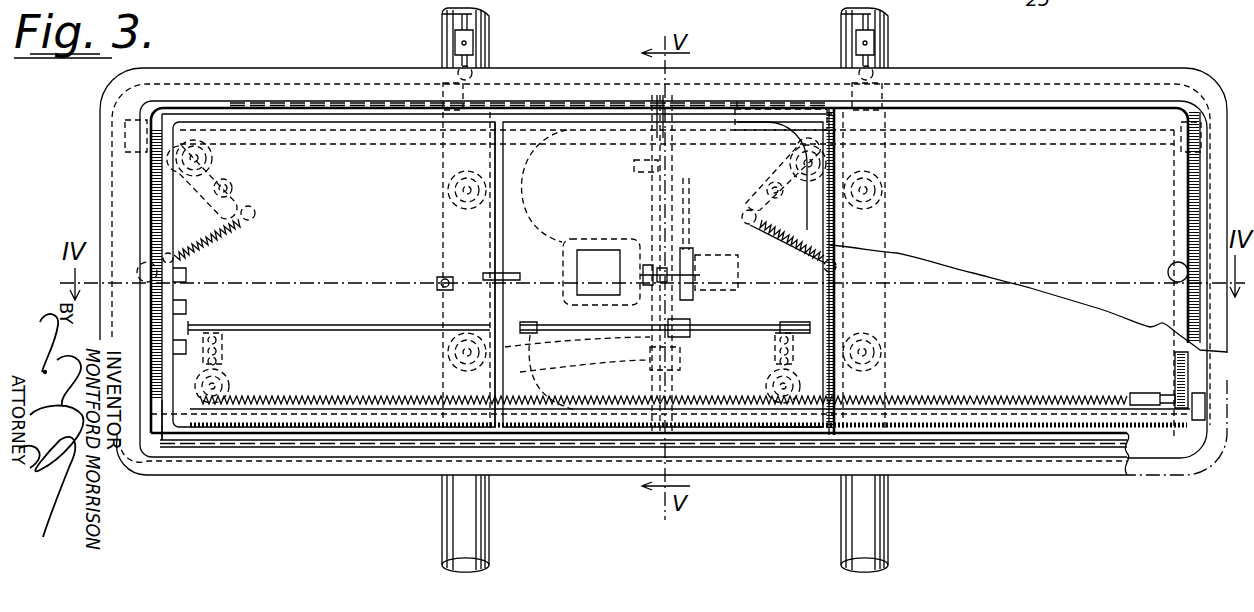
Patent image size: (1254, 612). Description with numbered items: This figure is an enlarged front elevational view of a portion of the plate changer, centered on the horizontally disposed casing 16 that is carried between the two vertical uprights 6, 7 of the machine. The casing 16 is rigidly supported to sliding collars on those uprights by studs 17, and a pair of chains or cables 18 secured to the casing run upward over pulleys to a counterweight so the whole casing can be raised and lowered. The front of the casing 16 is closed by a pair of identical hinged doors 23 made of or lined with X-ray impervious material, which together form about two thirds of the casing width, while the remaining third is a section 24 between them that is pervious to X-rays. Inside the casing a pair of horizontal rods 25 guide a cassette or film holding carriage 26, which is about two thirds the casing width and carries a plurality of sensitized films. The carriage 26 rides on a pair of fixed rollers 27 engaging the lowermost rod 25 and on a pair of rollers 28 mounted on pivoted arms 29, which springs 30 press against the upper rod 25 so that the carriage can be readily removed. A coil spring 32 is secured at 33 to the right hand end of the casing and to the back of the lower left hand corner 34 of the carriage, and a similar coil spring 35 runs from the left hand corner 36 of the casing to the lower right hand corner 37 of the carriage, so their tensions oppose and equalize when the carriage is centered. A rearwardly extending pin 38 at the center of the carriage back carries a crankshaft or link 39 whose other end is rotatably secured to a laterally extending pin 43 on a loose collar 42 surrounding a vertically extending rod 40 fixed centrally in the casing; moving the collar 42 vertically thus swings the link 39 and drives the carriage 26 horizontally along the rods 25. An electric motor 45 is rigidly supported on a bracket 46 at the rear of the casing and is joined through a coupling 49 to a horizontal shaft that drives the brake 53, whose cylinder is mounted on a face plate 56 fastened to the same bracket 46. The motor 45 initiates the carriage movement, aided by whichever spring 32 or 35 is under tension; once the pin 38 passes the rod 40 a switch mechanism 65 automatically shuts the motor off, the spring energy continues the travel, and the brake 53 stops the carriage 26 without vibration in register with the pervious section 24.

The upright 6 is at (490, 521).
The upright 7 is at (841, 513).
The casing 16 is at (100, 115).
The stud 17 is at (447, 193).
The chain or cable 18 is at (463, 20).
The hinged door 23 is at (1028, 278).
The section 24 is at (760, 118).
The rod 25 is at (952, 148).
The cassette or film holding carriage 26 is at (323, 157).
The fixed roller 27 is at (223, 376).
The roller 28 is at (213, 156).
The pivoted arm 29 is at (243, 189).
The spring 30 is at (227, 248).
The coil spring 32 is at (986, 396).
The securing point 33 is at (1175, 384).
The lower left hand corner 34 is at (188, 433).
The coil spring 35 is at (382, 430).
The left hand corner 36 is at (148, 460).
The lower right hand corner 37 is at (818, 433).
The pin 38 is at (492, 377).
The crankshaft or link 39 is at (577, 372).
The rod 40 is at (655, 163).
The loose collar 42 is at (683, 360).
The pin 43 is at (680, 316).
The electric motor 45 is at (577, 241).
The bracket 46 is at (655, 182).
The coupling 49 is at (648, 255).
The brake 53 is at (716, 243).
The face plate 56 is at (691, 235).
The switch mechanism 65 is at (438, 302).